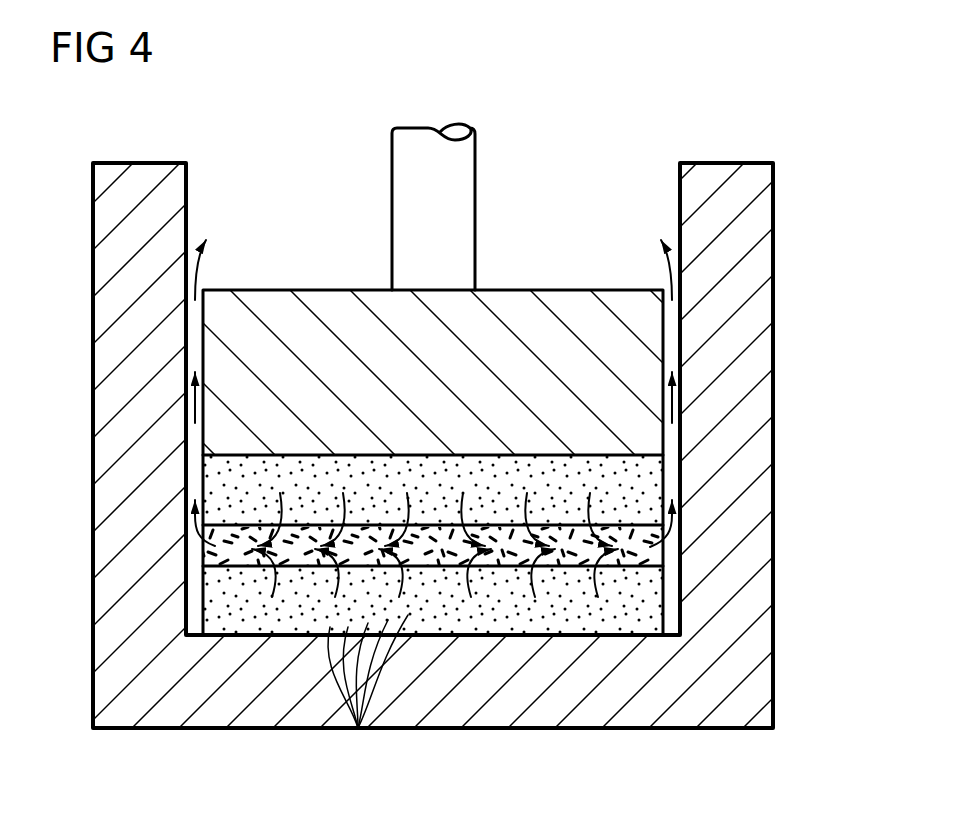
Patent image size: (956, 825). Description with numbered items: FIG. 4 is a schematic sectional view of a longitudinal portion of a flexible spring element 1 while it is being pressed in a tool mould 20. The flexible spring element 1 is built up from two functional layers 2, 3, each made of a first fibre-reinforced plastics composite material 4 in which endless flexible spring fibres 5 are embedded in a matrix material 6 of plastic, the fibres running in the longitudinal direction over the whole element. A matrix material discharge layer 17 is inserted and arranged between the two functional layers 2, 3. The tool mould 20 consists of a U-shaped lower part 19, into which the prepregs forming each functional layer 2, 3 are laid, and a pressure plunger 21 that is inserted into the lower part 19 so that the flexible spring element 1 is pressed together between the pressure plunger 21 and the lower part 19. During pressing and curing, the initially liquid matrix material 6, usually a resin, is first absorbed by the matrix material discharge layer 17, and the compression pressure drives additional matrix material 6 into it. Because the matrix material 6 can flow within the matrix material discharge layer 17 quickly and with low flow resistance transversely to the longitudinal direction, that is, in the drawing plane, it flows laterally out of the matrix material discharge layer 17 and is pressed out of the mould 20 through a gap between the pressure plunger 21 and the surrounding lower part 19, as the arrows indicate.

The flexible spring element 1 is at (184, 603).
The functional layer 2 is at (668, 466).
The functional layer 3 is at (668, 606).
The first fibre-reinforced plastics composite material 4 is at (520, 634).
The flexible spring fibres 5 is at (358, 728).
The matrix material 6 is at (438, 627).
The matrix material discharge layer 17 is at (668, 549).
The lower part 19 is at (762, 541).
The tool mould 20 is at (766, 118).
The pressure plunger 21 is at (565, 300).